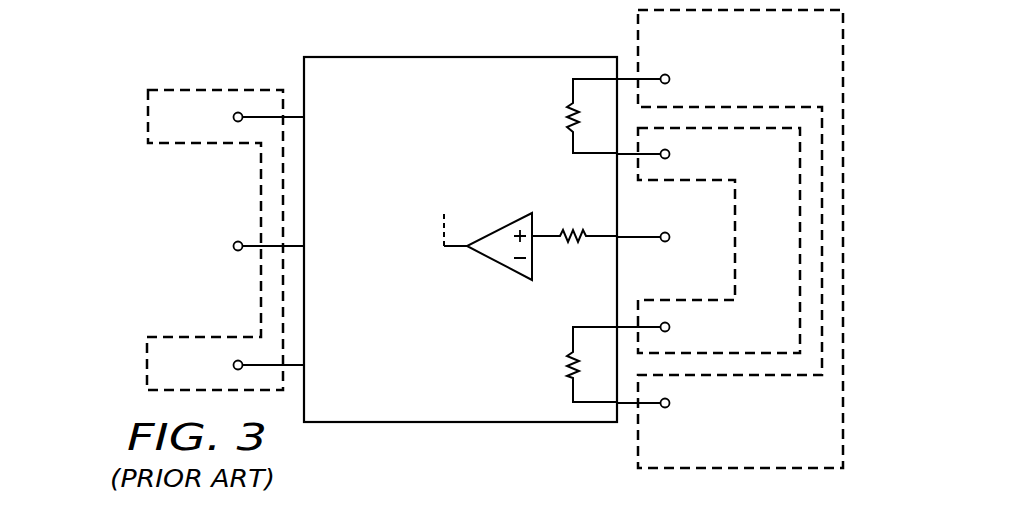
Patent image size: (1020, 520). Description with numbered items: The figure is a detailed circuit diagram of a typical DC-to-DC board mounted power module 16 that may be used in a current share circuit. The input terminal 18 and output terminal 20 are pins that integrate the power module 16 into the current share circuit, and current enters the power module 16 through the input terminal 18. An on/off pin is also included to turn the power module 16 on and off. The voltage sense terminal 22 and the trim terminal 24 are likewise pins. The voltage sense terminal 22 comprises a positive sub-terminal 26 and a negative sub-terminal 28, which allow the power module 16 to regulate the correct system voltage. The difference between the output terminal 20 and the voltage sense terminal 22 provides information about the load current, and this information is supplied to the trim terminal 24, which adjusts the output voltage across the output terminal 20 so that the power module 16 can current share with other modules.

The power module 16 is at (90, 169).
The input terminal 18 is at (213, 88).
The output terminal 20 is at (814, 434).
The voltage sense terminal 22 is at (781, 254).
The trim terminal 24 is at (667, 242).
The positive sub-terminal 26 is at (666, 74).
The negative sub-terminal 28 is at (667, 408).